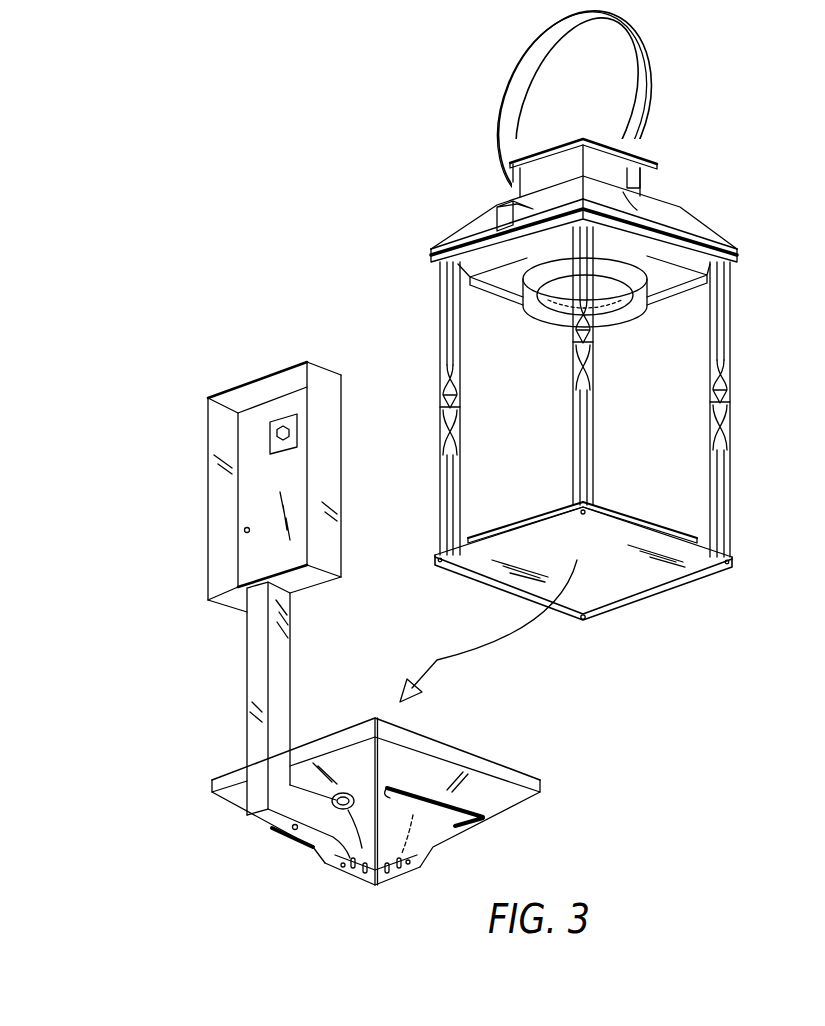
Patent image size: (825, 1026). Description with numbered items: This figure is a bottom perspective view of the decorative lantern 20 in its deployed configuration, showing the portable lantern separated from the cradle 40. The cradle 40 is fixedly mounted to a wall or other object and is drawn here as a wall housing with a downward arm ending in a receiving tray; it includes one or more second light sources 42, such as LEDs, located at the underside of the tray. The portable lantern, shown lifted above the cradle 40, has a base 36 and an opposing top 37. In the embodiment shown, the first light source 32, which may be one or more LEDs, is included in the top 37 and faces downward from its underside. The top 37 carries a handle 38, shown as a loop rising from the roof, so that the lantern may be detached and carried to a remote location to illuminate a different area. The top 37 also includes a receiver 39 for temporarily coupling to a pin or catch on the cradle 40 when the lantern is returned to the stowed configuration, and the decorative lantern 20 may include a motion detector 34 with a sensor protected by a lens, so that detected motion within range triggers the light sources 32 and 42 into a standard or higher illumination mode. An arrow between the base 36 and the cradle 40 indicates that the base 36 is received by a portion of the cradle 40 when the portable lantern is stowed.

The decorative lantern 20 is at (113, 358).
The first light source 32 is at (610, 307).
The motion detector 34 is at (653, 188).
The base 36 is at (688, 572).
The top 37 is at (700, 228).
The handle 38 is at (650, 75).
The receiver 39 is at (495, 212).
The cradle 40 is at (117, 620).
The second light source 42 is at (274, 832).